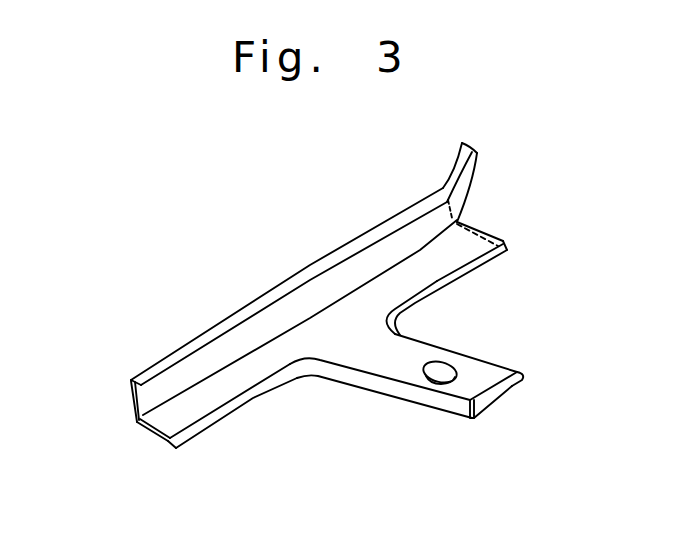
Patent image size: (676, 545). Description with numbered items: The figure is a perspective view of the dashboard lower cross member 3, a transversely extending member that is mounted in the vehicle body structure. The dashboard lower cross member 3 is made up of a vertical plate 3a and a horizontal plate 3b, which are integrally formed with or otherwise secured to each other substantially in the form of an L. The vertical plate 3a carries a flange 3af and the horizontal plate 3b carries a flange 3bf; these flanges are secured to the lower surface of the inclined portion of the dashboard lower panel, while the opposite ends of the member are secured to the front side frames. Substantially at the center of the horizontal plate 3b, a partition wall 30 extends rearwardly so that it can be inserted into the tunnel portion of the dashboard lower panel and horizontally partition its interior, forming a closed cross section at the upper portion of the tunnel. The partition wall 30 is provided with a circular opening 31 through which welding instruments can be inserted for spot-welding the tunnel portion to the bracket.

The dashboard lower cross member 3 is at (303, 267).
The flange of vertical plate 3af is at (227, 325).
The vertical plate 3a is at (132, 393).
The flange of horizontal plate 3bf is at (247, 393).
The horizontal plate 3b is at (150, 432).
The partition wall 30 is at (477, 360).
The circular opening 31 is at (431, 377).